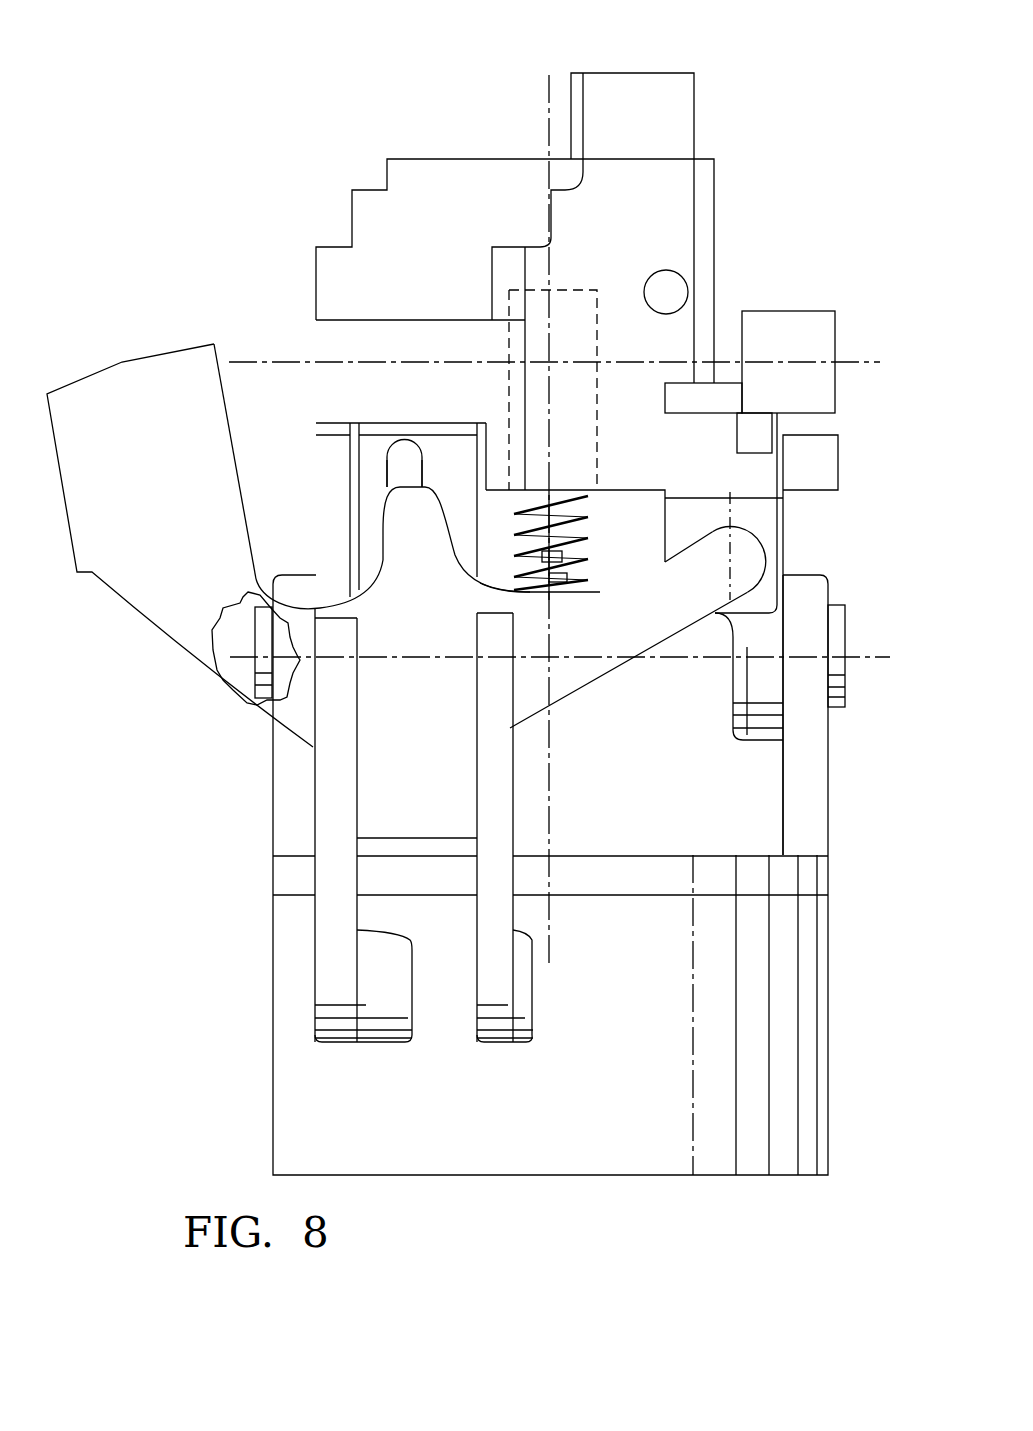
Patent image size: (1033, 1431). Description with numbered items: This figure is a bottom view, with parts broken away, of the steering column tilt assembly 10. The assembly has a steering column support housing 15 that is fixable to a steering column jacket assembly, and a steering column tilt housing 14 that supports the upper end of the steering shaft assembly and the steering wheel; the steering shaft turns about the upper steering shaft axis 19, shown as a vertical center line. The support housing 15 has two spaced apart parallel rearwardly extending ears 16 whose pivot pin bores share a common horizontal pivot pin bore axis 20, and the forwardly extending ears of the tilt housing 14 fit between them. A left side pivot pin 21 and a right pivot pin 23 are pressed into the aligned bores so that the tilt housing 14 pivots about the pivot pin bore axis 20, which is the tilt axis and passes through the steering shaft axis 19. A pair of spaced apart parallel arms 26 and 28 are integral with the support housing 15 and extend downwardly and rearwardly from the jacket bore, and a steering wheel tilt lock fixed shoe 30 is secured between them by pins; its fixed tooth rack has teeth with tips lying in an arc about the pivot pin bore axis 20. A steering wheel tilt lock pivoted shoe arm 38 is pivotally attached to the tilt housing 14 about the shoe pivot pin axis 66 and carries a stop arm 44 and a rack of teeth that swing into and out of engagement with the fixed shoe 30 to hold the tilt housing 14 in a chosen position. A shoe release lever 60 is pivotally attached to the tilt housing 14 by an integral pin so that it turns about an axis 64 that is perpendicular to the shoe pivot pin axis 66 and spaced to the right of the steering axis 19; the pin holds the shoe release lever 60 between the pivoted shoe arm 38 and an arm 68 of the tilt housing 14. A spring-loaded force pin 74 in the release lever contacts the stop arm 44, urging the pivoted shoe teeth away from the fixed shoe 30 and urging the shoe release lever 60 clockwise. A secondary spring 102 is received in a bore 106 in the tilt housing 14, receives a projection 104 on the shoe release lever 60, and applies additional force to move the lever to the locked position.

The steering column tilt assembly 10 is at (808, 103).
The steering column tilt housing 14 is at (418, 172).
The steering column support housing 15 is at (748, 1165).
The ears 16 is at (272, 775).
The upper steering shaft axis 19 is at (548, 82).
The pivot pin bore axis 20 is at (873, 655).
The left side pivot pin 21 is at (255, 660).
The right pivot pin 23 is at (847, 678).
The arm 26 is at (473, 1008).
The arm 28 is at (313, 953).
The steering wheel tilt lock fixed shoe 30 is at (393, 789).
The steering wheel tilt lock pivoted shoe arm 38 is at (370, 513).
The stop arm 44 is at (377, 447).
The shoe release lever 60 is at (162, 364).
The axis 64 is at (732, 560).
The shoe pivot pin axis 66 is at (853, 362).
The arm 68 is at (330, 550).
The force pin 74 is at (415, 452).
The secondary spring 102 is at (588, 532).
The projection 104 is at (558, 580).
The bore 106 is at (511, 334).